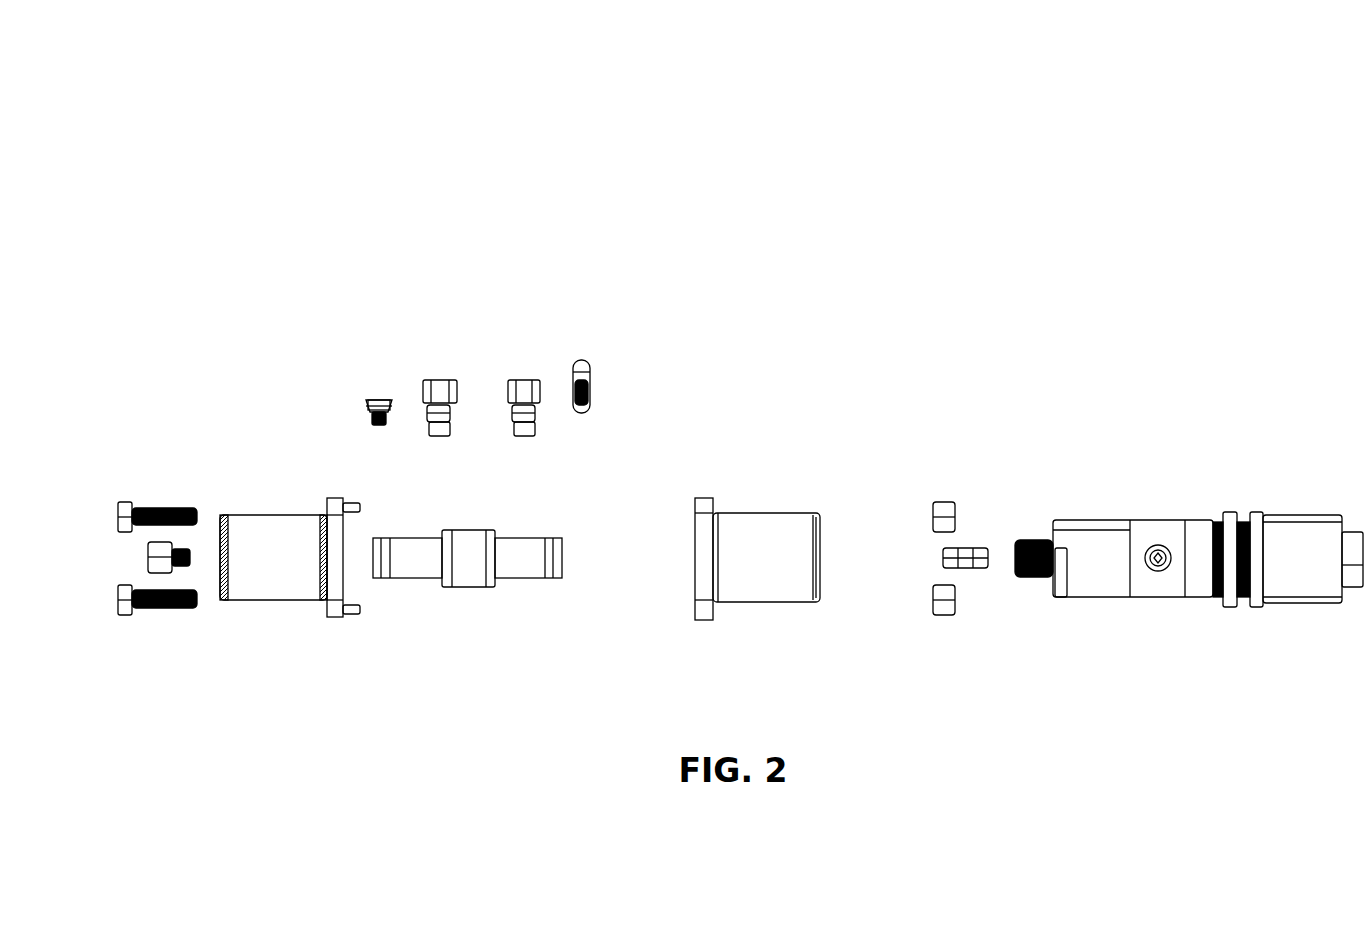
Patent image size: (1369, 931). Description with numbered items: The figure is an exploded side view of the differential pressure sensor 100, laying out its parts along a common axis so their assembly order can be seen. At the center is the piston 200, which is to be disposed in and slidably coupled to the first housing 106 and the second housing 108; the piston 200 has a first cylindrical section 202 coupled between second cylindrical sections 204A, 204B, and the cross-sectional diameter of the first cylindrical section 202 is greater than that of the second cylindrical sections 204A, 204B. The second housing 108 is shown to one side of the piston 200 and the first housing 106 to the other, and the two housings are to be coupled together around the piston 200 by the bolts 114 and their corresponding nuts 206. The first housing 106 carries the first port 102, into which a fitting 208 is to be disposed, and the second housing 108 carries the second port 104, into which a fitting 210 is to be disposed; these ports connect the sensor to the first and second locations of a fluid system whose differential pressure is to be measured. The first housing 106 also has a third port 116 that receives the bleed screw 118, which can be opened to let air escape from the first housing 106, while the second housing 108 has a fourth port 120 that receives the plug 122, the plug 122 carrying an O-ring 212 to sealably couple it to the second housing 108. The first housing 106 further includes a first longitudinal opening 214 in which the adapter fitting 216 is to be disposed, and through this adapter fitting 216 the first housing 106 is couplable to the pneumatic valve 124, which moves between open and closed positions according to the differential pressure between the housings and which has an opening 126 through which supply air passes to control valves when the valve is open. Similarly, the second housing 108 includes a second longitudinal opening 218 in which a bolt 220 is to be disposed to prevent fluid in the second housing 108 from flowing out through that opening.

The differential pressure sensor 100 is at (176, 132).
The first port 102 is at (811, 464).
The second port 104 is at (259, 546).
The first housing 106 is at (775, 512).
The second housing 108 is at (278, 606).
The bolts 114 is at (130, 500).
The third port 116 is at (802, 512).
The bleed screw 118 is at (588, 362).
The fourth port 120 is at (240, 512).
The plug 122 is at (379, 400).
The pneumatic valve 124 is at (1189, 458).
The opening 126 is at (1158, 575).
The piston 200 is at (545, 474).
The first cylindrical section 202 is at (475, 588).
The second cylindrical section 204A is at (535, 580).
The second cylindrical section 204B is at (418, 580).
The nuts 206 is at (1004, 426).
The fitting 208 is at (524, 378).
The fitting 210 is at (452, 380).
The O-ring 212 is at (368, 403).
The first longitudinal opening 214 is at (822, 560).
The adapter fitting 216 is at (980, 548).
The second longitudinal opening 218 is at (218, 560).
The bolt 220 is at (188, 548).